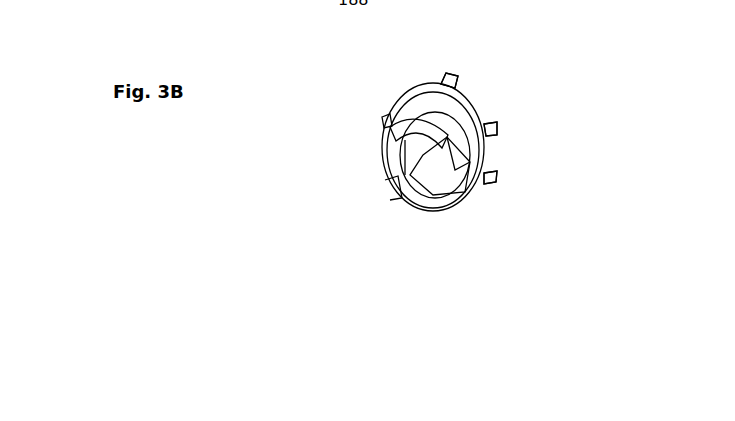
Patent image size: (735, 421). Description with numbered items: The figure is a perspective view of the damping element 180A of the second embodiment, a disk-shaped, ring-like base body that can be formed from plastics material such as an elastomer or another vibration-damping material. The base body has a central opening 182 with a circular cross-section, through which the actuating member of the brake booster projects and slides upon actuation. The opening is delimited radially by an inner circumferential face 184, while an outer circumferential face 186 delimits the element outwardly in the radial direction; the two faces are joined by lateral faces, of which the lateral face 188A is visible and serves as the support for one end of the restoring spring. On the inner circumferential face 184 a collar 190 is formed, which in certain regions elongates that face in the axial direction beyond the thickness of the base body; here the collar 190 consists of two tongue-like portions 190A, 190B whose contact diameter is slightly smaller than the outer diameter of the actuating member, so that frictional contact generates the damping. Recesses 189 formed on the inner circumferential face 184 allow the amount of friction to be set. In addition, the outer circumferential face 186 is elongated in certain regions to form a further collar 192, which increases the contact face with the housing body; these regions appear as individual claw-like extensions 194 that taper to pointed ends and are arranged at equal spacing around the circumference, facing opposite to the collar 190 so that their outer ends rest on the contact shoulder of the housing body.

The damping element 180A is at (565, 98).
The central opening 182 is at (432, 158).
The inner circumferential face 184 is at (392, 157).
The outer circumferential face 186 is at (450, 112).
The lateral face 188A is at (387, 118).
The recesses 189 is at (460, 177).
The collar 190 is at (374, 203).
The tongue-like portion 190A is at (398, 199).
The tongue-like portion 190B is at (403, 122).
The further collar 192 is at (509, 184).
The extensions 194 is at (490, 135).